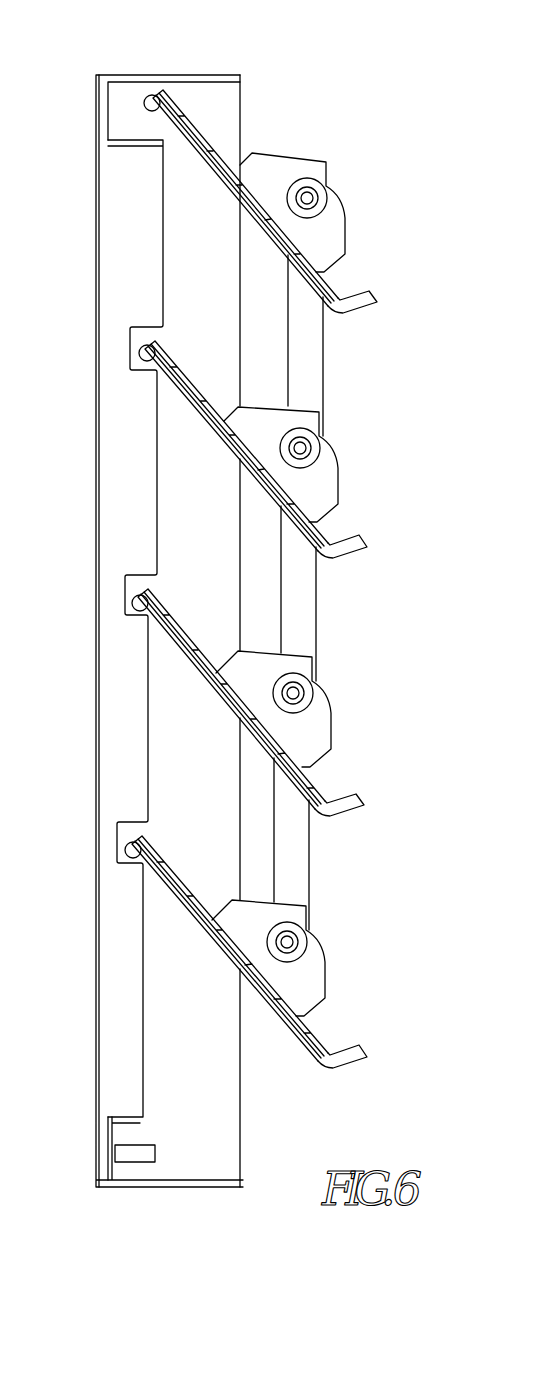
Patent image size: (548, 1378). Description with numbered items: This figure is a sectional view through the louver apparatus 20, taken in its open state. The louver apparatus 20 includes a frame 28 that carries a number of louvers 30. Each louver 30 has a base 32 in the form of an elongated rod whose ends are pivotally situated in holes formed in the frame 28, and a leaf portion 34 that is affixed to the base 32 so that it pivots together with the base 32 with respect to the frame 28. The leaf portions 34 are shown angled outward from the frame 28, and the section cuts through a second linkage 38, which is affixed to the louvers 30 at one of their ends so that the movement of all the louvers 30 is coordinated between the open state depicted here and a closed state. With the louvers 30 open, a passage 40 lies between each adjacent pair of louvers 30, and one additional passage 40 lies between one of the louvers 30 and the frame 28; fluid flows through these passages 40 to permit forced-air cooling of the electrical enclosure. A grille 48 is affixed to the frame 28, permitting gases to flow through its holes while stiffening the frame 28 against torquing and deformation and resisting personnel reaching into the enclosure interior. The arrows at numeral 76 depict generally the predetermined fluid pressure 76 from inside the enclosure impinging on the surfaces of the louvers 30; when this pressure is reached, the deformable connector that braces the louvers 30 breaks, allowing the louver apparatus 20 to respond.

The louver apparatus 20 is at (201, 61).
The frame 28 is at (241, 83).
The louver 30 is at (241, 106).
The base 32 is at (140, 99).
The leaf portion 34 is at (212, 165).
The second linkage 38 is at (312, 853).
The passage 40 is at (205, 285).
The grille 48 is at (99, 1035).
The predetermined fluid pressure 76 is at (360, 282).